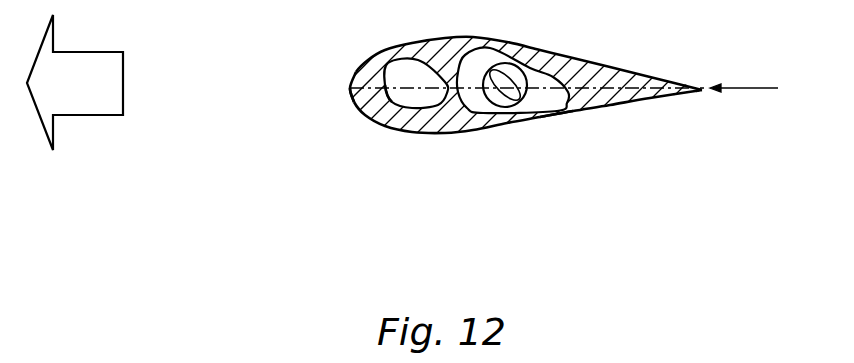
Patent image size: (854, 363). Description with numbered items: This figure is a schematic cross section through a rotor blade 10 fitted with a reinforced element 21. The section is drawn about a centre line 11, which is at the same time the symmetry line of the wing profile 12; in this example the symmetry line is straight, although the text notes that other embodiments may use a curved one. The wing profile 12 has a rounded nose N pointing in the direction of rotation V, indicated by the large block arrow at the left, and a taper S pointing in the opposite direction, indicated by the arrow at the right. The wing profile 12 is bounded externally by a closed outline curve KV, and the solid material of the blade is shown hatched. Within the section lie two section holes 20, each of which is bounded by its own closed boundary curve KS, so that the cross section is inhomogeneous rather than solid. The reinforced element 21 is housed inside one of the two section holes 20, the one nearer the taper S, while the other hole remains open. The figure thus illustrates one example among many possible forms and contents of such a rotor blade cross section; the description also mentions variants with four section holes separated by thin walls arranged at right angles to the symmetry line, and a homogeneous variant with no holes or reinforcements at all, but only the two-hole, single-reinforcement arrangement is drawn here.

The rotor blade 10 is at (645, 55).
The centre line 11 is at (642, 102).
The wing profile 12 is at (333, 67).
The section holes 20 is at (415, 99).
The reinforced element 21 is at (502, 97).
The nose N is at (337, 87).
The closed outline curve KV is at (344, 106).
The closed boundary curve KS is at (379, 110).
The taper S is at (757, 83).
The direction of rotation V is at (75, 82).